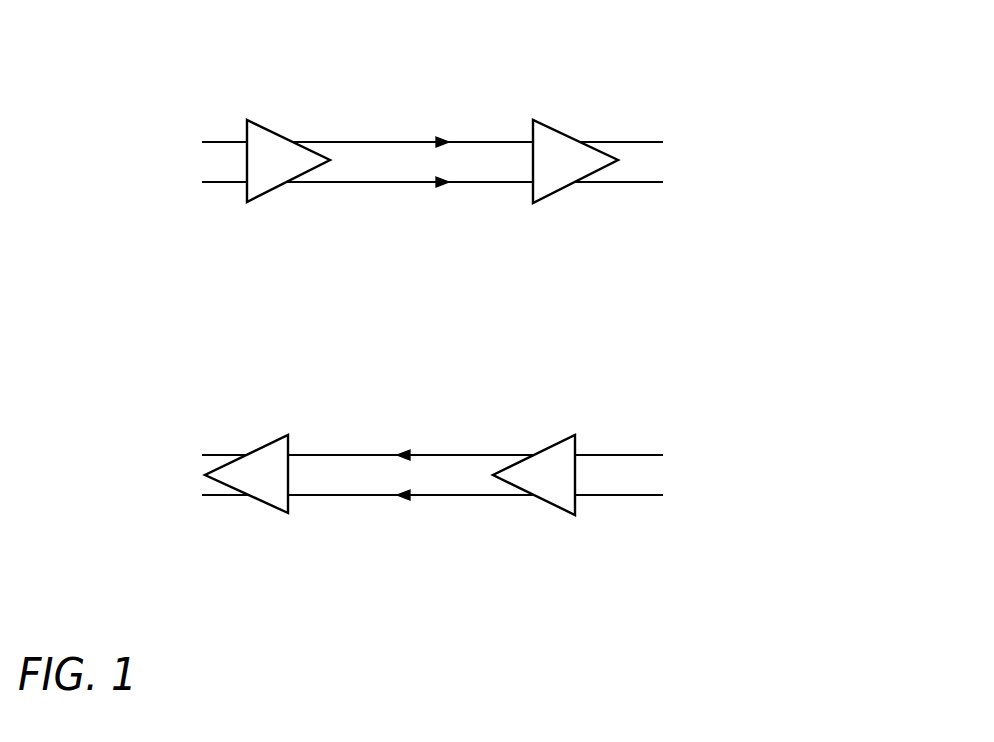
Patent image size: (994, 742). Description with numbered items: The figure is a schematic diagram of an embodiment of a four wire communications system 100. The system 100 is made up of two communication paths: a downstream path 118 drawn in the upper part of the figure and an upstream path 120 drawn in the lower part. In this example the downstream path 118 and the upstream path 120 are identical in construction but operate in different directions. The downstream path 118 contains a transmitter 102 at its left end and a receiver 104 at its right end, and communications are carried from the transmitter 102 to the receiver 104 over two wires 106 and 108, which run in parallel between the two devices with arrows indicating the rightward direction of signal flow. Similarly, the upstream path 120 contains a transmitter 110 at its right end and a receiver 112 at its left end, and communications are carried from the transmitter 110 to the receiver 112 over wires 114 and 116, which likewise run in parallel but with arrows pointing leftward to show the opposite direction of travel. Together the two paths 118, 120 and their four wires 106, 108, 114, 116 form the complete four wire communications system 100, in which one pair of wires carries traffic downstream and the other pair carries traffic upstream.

The four wire communications system 100 is at (692, 576).
The transmitter 102 is at (271, 127).
The receiver 104 is at (561, 127).
The wire 106 is at (428, 141).
The wire 108 is at (347, 184).
The transmitter 110 is at (562, 439).
The receiver 112 is at (276, 441).
The wire 114 is at (428, 454).
The wire 116 is at (347, 497).
The downstream path 118 is at (829, 209).
The upstream path 120 is at (829, 521).